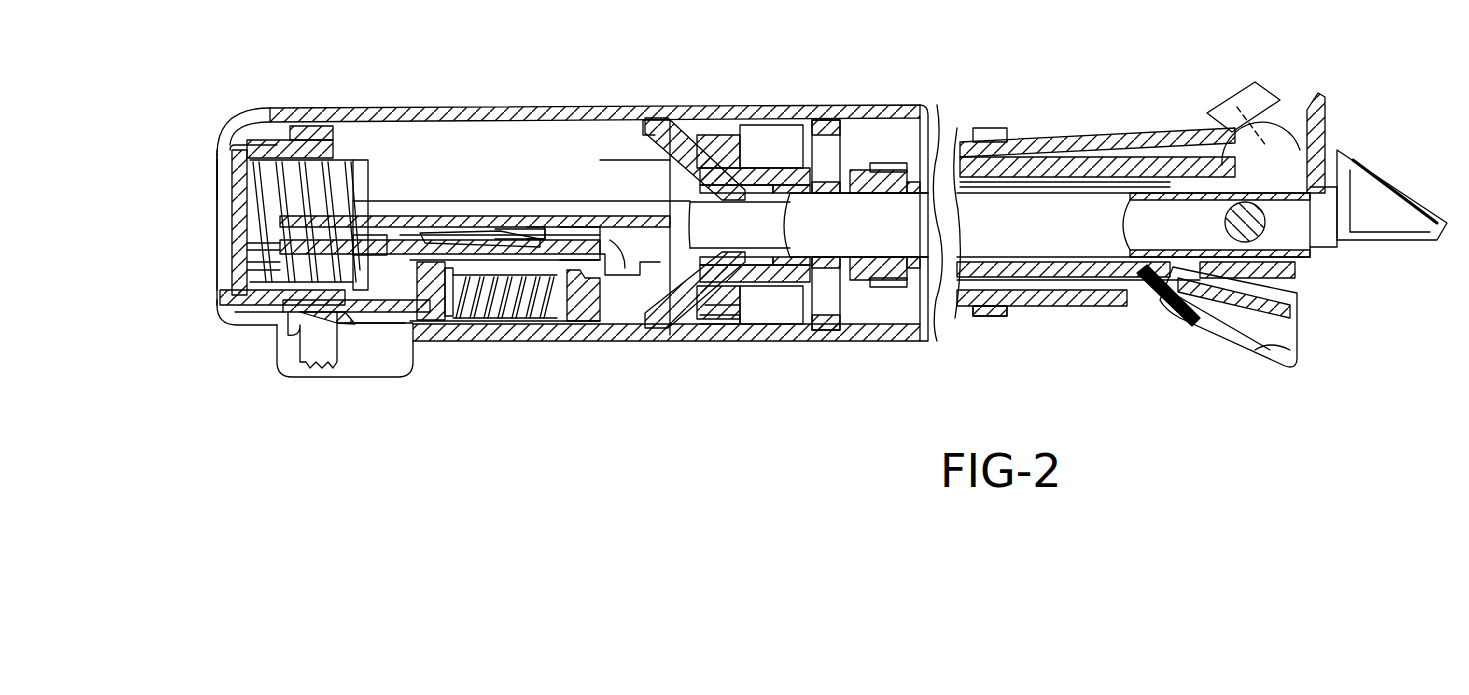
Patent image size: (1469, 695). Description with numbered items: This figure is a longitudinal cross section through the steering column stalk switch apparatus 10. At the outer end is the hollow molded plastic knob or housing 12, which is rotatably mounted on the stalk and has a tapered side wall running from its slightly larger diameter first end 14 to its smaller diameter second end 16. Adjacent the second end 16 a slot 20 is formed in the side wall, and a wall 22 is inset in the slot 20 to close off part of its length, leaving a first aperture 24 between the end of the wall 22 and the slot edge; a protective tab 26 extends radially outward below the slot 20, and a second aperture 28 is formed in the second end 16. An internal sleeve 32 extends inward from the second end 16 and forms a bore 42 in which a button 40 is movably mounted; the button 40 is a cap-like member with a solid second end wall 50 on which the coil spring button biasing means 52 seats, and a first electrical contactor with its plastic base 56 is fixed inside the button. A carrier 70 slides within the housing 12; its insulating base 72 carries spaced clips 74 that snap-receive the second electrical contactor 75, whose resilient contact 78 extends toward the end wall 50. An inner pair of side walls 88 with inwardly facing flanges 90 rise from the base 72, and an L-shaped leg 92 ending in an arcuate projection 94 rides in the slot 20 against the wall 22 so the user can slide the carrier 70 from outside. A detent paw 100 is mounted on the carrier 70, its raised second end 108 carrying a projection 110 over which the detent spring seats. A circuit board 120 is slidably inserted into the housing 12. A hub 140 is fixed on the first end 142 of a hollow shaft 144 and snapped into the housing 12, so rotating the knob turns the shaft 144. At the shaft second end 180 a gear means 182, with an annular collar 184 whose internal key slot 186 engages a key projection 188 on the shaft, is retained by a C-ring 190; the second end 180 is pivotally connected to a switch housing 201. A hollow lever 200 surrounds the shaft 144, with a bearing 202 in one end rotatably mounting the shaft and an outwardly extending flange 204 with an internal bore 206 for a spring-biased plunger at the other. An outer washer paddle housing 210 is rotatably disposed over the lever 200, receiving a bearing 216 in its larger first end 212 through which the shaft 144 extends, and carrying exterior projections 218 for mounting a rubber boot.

The steering column stalk switch apparatus 10 is at (817, 23).
The housing 12 is at (432, 107).
The first end 14 is at (728, 127).
The second end 16 is at (243, 134).
The slot 20 is at (290, 350).
The wall 22 is at (287, 303).
The first aperture 24 is at (413, 337).
The protective tab 26 is at (367, 367).
The second aperture 28 is at (213, 153).
The internal sleeve 32 is at (317, 127).
The button 40 is at (215, 188).
The bore 42 is at (263, 170).
The solid second end wall 50 is at (250, 247).
The button biasing means 52 is at (250, 263).
The base 56 is at (358, 135).
The carrier 70 is at (563, 237).
The base 72 is at (622, 280).
The clips 74 is at (527, 235).
The second electrical contactor 75 is at (500, 235).
The contact 78 is at (445, 230).
The inner pair of side walls 88 is at (513, 270).
The inwardly facing flange 90 is at (563, 310).
The L-shaped leg 92 is at (357, 320).
The arcuate projection 94 is at (313, 373).
The detent paw 100 is at (582, 262).
The raised second end 108 is at (443, 315).
The projection 110 is at (463, 310).
The circuit board 120 is at (613, 207).
The hub 140 is at (750, 272).
The first end 142 is at (700, 290).
The shaft 144 is at (1002, 217).
The second end 180 is at (1310, 243).
The gear means 182 is at (1323, 97).
The annular collar 184 is at (1227, 287).
The internal key slot 186 is at (1253, 130).
The key projection 188 is at (1220, 132).
The C-ring 190 is at (1297, 267).
The lever 200 is at (917, 313).
The switch housing 201 is at (1117, 140).
The bearing 202 is at (860, 292).
The flange 204 is at (1237, 340).
The internal bore 206 is at (1293, 340).
The outer washer paddle housing 210 is at (905, 113).
The first end 212 is at (728, 330).
The bearing 216 is at (827, 127).
The projections 218 is at (1003, 316).